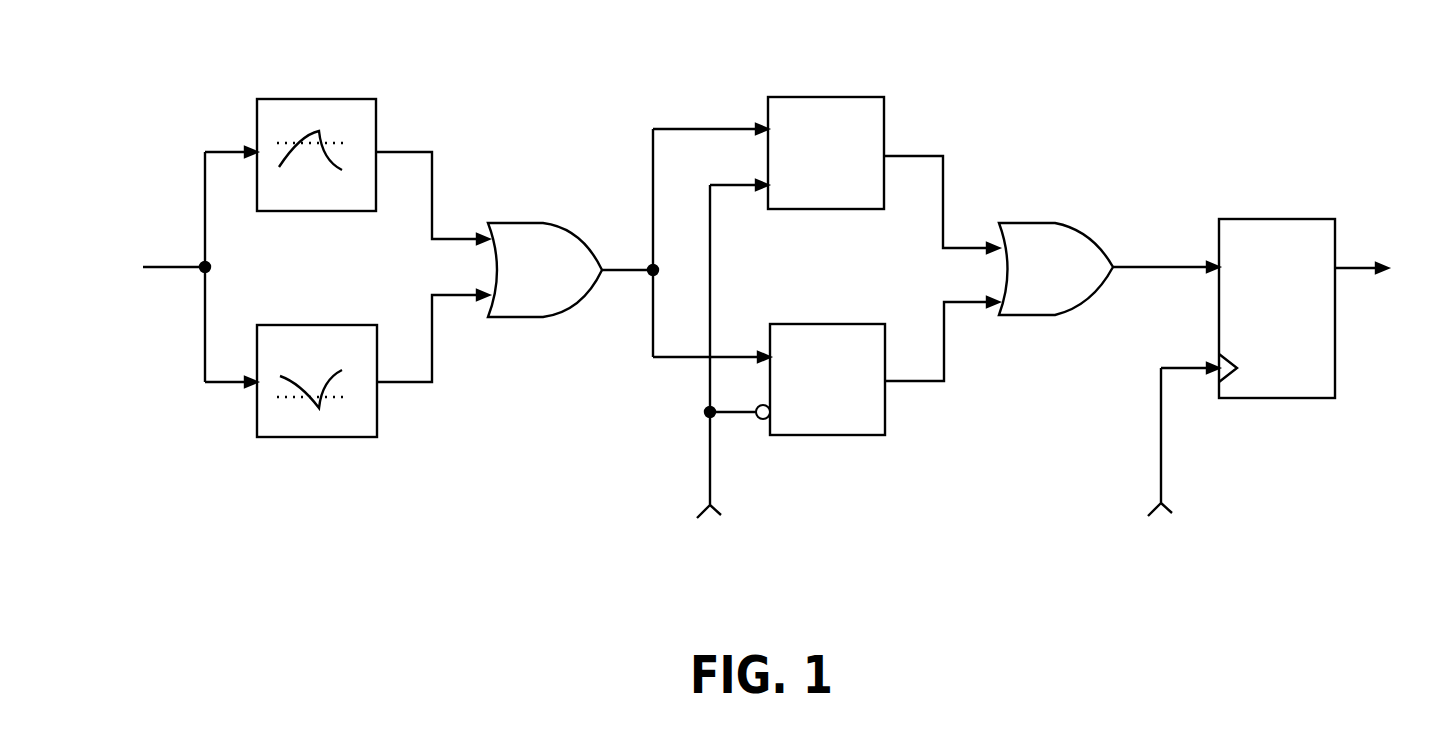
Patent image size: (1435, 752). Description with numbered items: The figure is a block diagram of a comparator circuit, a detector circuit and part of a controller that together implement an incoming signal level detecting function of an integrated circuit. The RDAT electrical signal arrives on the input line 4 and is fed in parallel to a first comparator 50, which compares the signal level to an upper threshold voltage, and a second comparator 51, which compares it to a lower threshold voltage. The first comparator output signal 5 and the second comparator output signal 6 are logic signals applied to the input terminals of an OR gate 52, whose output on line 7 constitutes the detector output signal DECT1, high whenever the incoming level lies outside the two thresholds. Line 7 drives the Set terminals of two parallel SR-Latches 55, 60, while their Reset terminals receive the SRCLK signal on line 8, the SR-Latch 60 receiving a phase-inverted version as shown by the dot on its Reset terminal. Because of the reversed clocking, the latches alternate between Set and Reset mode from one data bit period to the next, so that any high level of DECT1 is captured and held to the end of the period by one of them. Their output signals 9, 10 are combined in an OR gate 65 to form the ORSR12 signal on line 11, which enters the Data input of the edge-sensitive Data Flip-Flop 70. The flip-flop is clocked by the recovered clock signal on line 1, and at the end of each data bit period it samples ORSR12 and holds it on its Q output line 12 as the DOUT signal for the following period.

The recovered clock signal line 1 is at (1183, 439).
The input line 4 is at (176, 267).
The first comparator output signal 5 is at (432, 178).
The second comparator output signal 6 is at (433, 336).
The OR gate output signal line 7 is at (686, 243).
The SRCLK signal line 8 is at (732, 349).
The output signal of SR-Latch 55 9 is at (941, 181).
The output signal of SR-Latch 60 10 is at (942, 339).
The OR gate output signal line 11 is at (1166, 248).
The Q output line 12 is at (1384, 268).
The first comparator 50 is at (337, 99).
The second comparator 51 is at (337, 325).
The OR gate 52 is at (513, 223).
The SR-Latch 55 is at (864, 97).
The SR-Latch 60 is at (865, 324).
The OR gate 65 is at (1038, 223).
The Data Flip-Flop 70 is at (1315, 219).